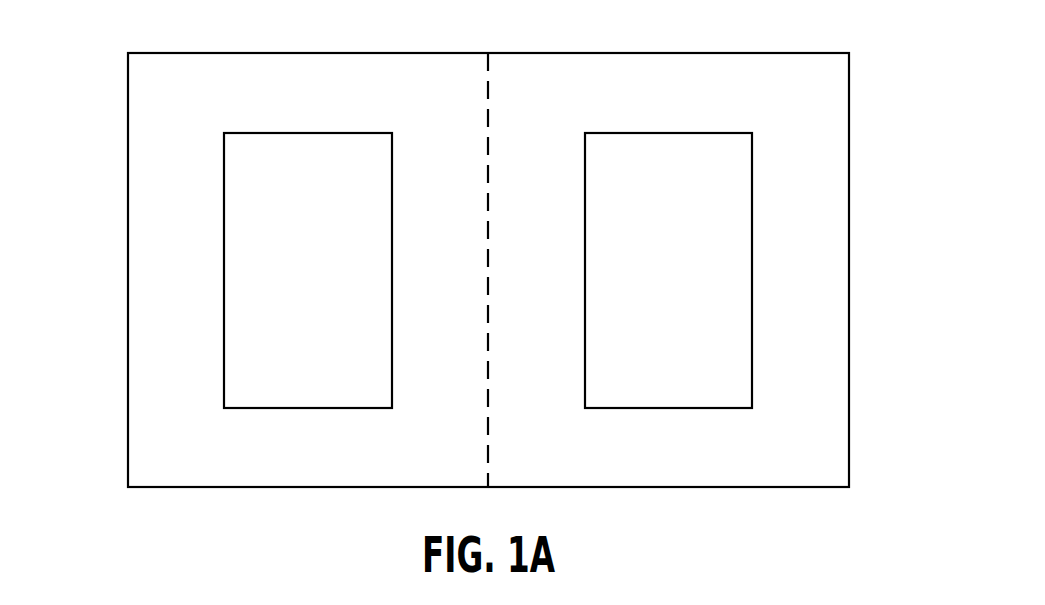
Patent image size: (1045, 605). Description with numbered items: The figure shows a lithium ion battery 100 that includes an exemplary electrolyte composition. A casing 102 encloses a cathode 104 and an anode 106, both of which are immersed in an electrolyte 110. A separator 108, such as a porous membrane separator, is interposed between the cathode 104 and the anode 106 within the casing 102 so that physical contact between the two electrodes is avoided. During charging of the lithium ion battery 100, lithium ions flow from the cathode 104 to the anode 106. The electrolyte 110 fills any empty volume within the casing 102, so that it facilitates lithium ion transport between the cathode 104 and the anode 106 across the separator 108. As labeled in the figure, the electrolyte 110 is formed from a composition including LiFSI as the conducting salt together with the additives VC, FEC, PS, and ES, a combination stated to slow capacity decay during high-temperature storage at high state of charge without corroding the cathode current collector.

The lithium ion battery 100 is at (862, 85).
The casing 102 is at (128, 76).
The cathode 104 is at (325, 280).
The anode 106 is at (685, 280).
The separator 108 is at (490, 260).
The electrolyte 110 is at (323, 88).